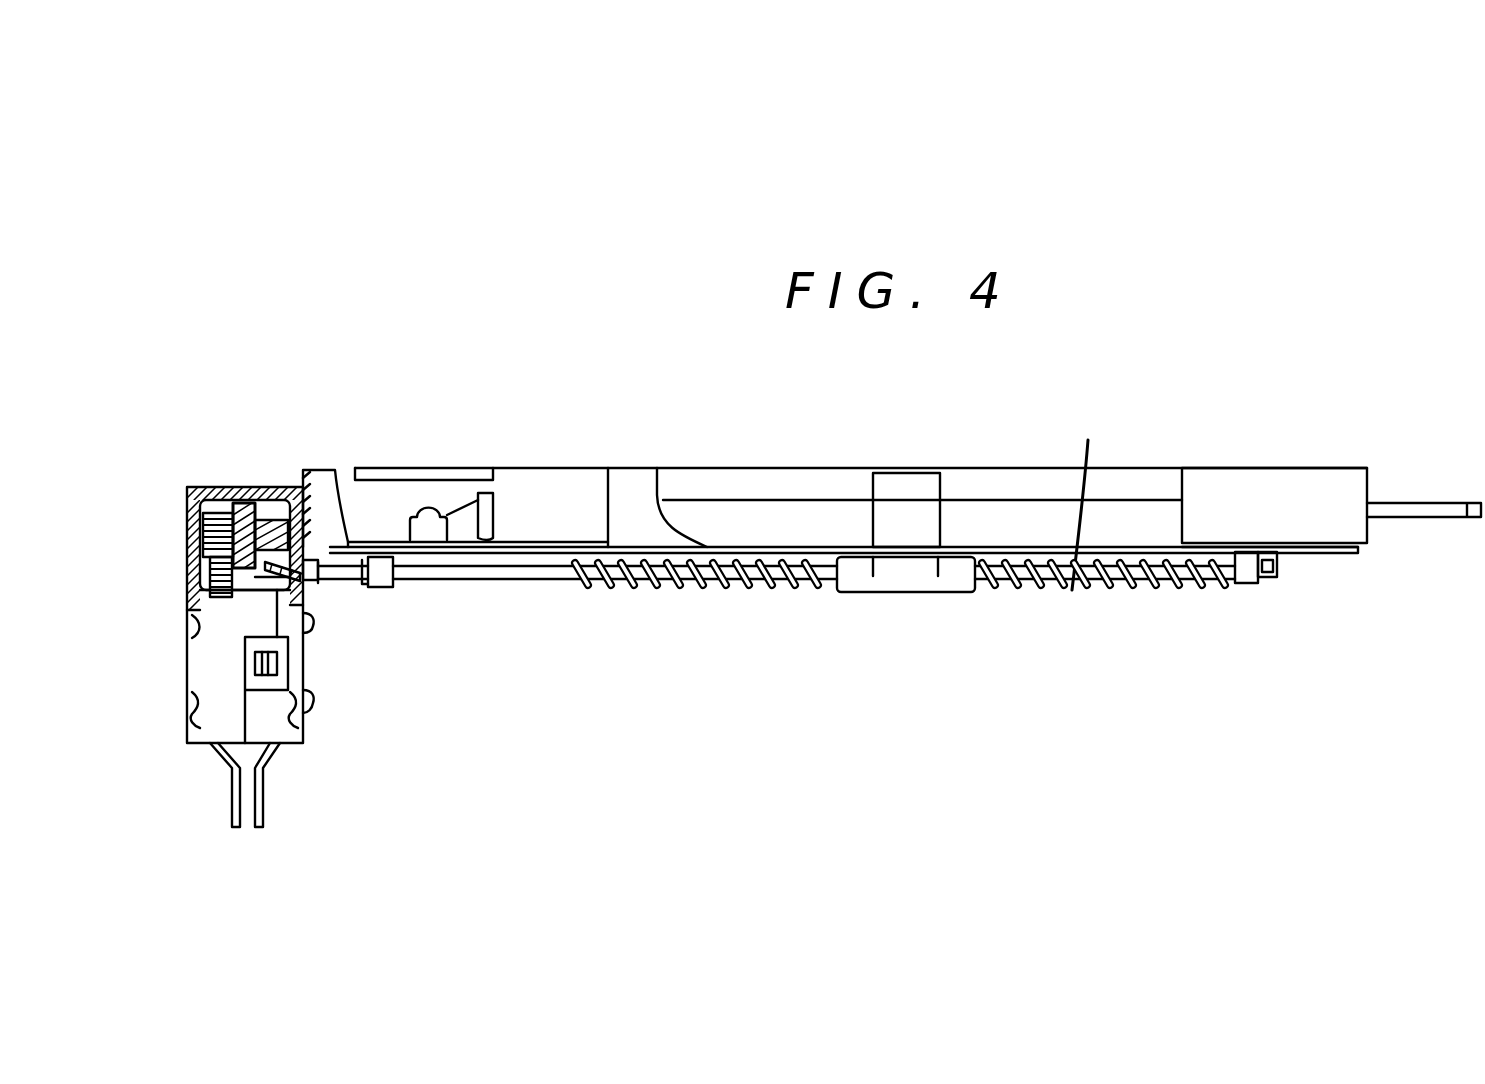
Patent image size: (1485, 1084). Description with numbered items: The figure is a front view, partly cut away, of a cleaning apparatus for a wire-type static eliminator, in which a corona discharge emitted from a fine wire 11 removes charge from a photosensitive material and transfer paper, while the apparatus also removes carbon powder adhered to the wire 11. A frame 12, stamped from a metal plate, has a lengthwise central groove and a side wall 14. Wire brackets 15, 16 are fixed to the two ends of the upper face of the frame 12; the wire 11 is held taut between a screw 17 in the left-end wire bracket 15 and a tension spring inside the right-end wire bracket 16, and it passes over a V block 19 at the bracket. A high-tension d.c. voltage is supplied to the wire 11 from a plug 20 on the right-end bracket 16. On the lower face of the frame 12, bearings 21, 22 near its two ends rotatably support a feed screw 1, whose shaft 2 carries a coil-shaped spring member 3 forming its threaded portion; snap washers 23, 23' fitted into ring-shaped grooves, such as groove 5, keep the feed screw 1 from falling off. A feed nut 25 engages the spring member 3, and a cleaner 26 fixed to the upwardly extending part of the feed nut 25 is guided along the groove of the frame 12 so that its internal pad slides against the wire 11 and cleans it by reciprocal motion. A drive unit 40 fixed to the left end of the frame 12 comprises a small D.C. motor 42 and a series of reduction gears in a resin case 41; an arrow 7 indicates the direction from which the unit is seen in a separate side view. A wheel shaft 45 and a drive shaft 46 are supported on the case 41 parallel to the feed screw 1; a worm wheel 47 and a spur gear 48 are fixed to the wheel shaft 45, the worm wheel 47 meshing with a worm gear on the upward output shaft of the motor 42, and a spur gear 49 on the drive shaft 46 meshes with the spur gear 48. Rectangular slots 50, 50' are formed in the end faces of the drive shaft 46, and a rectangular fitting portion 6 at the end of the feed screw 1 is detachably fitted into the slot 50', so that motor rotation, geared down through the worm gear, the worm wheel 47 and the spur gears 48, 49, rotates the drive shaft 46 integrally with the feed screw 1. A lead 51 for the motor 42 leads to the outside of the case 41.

The feed screw 1 is at (776, 619).
The guide rod 2 is at (543, 583).
The coil-shaped spring member 3 is at (598, 583).
The ring-shaped groove 5 is at (817, 413).
The rectangular fitting portion 6 is at (312, 578).
The arrow 7 is at (228, 720).
The wire 11 is at (463, 500).
The frame 12 is at (762, 547).
The side wall 14 is at (633, 480).
The wire bracket 15 is at (550, 480).
The wire bracket 16 is at (1220, 475).
The screw 17 is at (428, 510).
The V block 19 is at (481, 493).
The plug 20 is at (1422, 505).
The bearing 21 is at (388, 587).
The bearing 22 is at (1246, 583).
The snap washer 23 is at (379, 609).
The snap washer 23' is at (1298, 602).
The feed nut 25 is at (962, 580).
The cleaner 26 is at (935, 492).
The drive unit 40 is at (235, 524).
The case 41 is at (270, 485).
The D.C. motor 42 is at (227, 607).
The wheel shaft 45 is at (287, 485).
The drive shaft 46 is at (253, 580).
The worm wheel 47 is at (237, 485).
The spur gear 48 is at (213, 485).
The spur gear 49 is at (228, 613).
The rectangular slot 50 is at (201, 547).
The rectangular slot 50' is at (335, 626).
The lead 51 is at (262, 772).